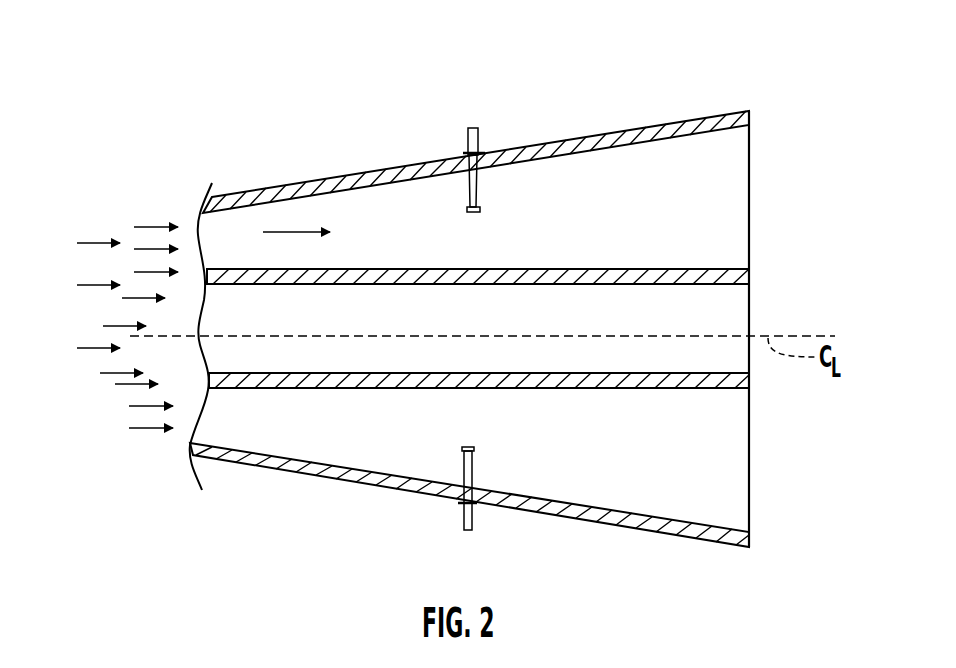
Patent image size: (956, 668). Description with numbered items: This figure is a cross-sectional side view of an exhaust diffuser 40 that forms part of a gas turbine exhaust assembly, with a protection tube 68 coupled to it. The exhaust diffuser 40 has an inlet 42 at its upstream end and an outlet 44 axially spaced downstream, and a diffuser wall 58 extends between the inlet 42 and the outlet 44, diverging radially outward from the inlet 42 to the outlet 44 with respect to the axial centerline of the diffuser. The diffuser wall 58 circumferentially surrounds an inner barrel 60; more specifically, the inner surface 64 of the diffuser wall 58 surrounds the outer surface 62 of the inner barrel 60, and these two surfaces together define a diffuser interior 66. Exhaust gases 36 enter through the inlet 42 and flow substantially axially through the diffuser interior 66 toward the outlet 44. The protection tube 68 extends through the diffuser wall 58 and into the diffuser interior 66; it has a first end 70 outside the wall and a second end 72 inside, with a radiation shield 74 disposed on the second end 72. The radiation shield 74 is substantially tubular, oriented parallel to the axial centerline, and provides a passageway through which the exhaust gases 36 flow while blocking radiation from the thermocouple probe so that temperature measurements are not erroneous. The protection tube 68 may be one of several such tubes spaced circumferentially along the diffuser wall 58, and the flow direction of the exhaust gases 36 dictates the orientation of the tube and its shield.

The exhaust gases 36 is at (97, 283).
The exhaust diffuser 40 is at (567, 84).
The inlet 42 is at (197, 225).
The outlet 44 is at (749, 228).
The diffuser wall 58 is at (313, 178).
The inner barrel 60 is at (372, 271).
The outer surface of inner barrel 62 is at (673, 264).
The inner surface of diffuser wall 64 is at (553, 161).
The diffuser interior 66 is at (560, 244).
The protection tube 68 is at (486, 304).
The first end 70 is at (465, 530).
The second end 72 is at (475, 450).
The radiation shield 74 is at (465, 447).